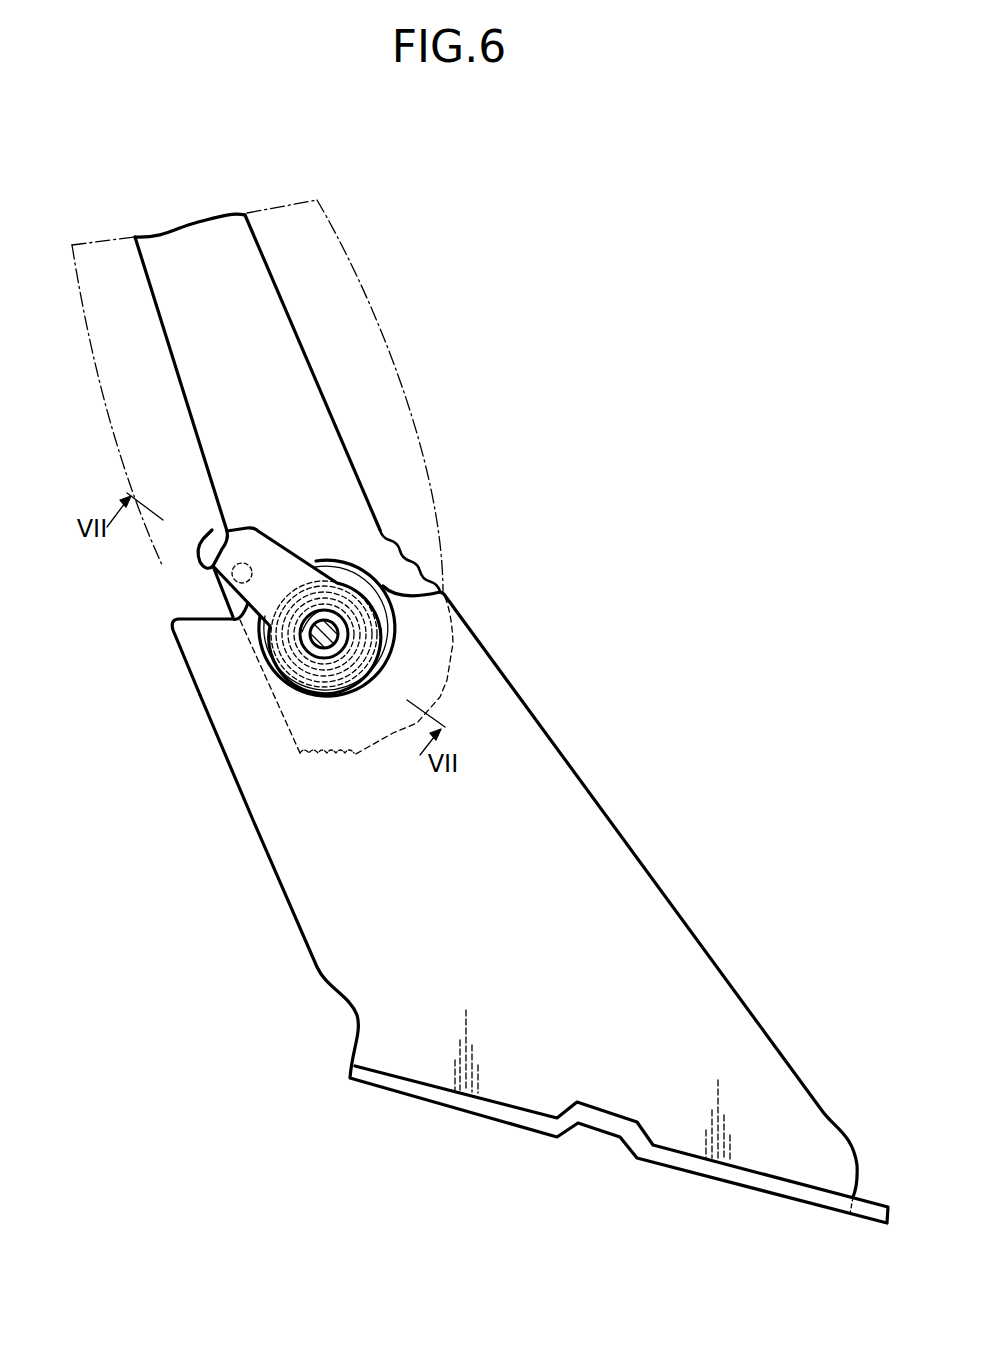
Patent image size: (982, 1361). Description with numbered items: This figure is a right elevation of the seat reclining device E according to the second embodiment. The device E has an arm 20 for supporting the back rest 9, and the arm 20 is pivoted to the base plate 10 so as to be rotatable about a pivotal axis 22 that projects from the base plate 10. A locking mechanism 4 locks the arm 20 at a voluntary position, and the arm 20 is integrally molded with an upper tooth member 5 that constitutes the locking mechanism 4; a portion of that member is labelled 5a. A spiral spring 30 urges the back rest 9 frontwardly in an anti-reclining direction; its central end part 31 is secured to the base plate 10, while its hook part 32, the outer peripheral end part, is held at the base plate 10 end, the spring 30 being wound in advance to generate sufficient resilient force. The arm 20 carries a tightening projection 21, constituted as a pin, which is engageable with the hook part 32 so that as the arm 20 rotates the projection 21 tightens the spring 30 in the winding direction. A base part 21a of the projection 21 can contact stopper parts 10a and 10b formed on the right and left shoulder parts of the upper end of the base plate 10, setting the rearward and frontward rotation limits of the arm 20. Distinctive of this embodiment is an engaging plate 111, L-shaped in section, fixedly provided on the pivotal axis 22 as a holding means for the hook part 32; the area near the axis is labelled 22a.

The locking mechanism 4 is at (313, 766).
The upper tooth member 5 is at (445, 697).
The serrated portion of base plate 5a is at (352, 758).
The back rest 9 is at (340, 247).
The base plate 10 is at (648, 863).
The stopper part 10a is at (203, 612).
The stopper part 10b is at (413, 563).
The arm 20 is at (323, 380).
The tightening projection 21 is at (283, 548).
The base part of tightening projection 21a is at (257, 545).
The pivotal axis 22 is at (324, 634).
The inner end of spiral spring 22a is at (302, 632).
The spiral spring 30 is at (393, 657).
The central end part of spiral spring 31 is at (313, 610).
The hook part 32 is at (205, 590).
The engaging plate 111 is at (249, 528).
The seat reclining device E is at (499, 525).